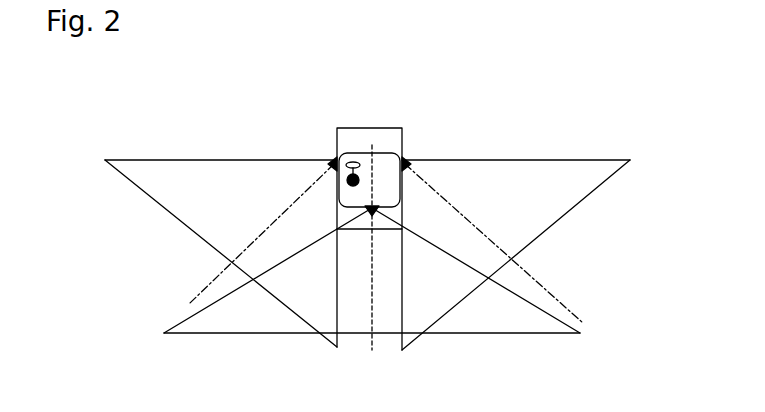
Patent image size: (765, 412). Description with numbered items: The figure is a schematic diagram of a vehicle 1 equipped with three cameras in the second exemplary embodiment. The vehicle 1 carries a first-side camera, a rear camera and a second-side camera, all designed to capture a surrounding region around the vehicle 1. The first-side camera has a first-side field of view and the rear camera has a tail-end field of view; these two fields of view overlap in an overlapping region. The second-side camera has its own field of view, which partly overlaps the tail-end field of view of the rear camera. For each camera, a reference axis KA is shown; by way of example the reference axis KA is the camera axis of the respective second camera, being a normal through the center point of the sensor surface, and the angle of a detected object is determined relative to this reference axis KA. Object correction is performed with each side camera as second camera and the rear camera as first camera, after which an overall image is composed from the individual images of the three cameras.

The vehicle 1 is at (326, 106).
The reference axis KA is at (212, 282).